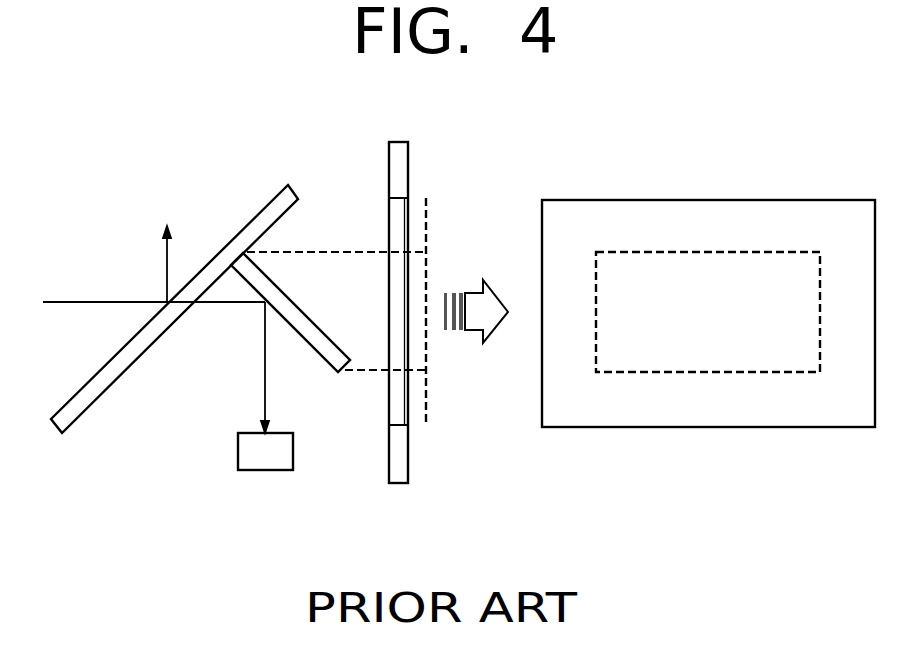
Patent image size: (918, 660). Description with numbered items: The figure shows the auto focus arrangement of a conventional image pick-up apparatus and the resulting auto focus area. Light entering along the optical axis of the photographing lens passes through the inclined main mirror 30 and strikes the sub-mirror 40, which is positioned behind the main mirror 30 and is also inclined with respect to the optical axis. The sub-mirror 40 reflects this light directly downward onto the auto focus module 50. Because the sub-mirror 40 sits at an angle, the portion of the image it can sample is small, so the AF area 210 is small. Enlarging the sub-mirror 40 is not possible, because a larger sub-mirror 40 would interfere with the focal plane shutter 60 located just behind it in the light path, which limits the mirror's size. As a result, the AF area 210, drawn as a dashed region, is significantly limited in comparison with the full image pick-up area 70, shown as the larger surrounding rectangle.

The main mirror 30 is at (270, 201).
The sub-mirror 40 is at (317, 348).
The auto focus module 50 is at (295, 453).
The focal plane shutter 60 is at (400, 485).
The image pick-up area 70 is at (425, 413).
The AF area 210 is at (755, 252).